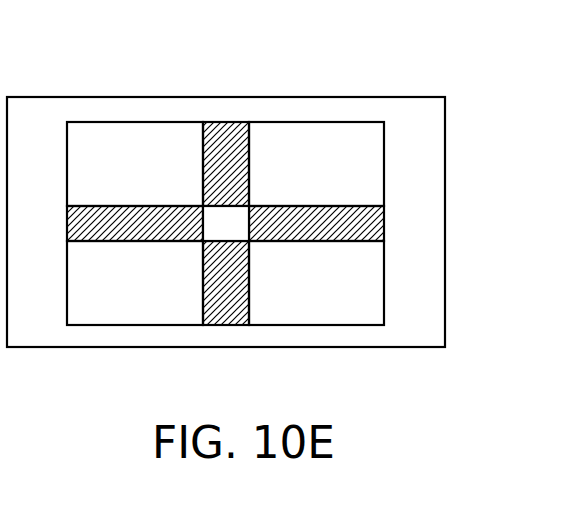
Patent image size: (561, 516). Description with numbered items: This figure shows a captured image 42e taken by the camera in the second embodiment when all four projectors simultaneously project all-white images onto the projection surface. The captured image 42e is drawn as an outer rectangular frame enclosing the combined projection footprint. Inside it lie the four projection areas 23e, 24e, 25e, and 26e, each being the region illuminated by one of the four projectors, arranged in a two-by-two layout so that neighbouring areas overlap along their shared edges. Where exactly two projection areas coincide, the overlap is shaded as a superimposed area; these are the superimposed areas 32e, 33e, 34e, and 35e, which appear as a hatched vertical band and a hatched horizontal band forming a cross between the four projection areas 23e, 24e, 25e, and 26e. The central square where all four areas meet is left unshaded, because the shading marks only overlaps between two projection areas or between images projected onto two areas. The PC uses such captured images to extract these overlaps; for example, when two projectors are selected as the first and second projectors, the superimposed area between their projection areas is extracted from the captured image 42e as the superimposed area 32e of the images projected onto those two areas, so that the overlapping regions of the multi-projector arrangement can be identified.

The captured image 42e is at (397, 97).
The projection area 23e is at (145, 122).
The projection area 24e is at (308, 122).
The projection area 25e is at (67, 287).
The projection area 26e is at (384, 287).
The superimposed area 32e is at (233, 122).
The superimposed area 33e is at (67, 223).
The superimposed area 34e is at (235, 325).
The superimposed area 35e is at (384, 223).